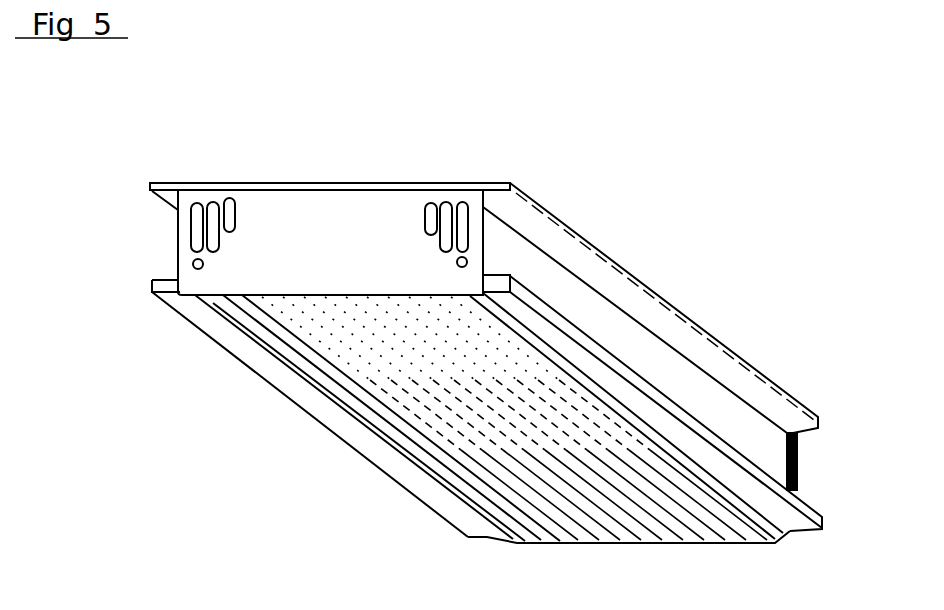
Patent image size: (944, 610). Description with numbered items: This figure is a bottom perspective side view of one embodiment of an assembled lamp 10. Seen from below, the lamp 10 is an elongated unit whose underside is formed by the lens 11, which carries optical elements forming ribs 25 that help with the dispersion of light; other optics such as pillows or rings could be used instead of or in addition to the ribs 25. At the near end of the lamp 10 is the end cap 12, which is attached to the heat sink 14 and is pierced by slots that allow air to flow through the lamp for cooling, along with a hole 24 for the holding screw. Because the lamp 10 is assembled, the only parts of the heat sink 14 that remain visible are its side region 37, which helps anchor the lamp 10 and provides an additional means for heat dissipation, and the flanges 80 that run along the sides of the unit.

The lamp 10 is at (780, 230).
The lens 11 is at (470, 477).
The end cap 12 is at (319, 207).
The heat sink 14 is at (563, 247).
The hole 24 is at (198, 262).
The ribs 25 is at (370, 363).
The side region 37 is at (663, 313).
The flanges 80 is at (677, 408).